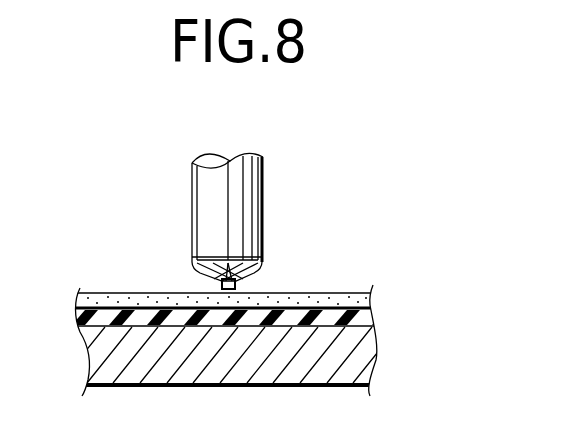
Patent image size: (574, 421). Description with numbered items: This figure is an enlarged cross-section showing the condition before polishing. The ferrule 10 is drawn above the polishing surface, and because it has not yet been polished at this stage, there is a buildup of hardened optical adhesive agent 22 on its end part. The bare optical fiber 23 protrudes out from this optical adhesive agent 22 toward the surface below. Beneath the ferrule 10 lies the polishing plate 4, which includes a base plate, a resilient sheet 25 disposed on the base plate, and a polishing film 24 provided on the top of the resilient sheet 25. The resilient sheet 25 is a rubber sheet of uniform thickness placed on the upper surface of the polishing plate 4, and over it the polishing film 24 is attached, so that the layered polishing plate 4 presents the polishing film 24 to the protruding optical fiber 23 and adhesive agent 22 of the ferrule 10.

The ferrule 10 is at (263, 190).
The optical adhesive agent 22 is at (242, 277).
The bare optical fiber 23 is at (220, 285).
The polishing film 24 is at (367, 303).
The resilient sheet 25 is at (364, 323).
The polishing plate 4 is at (365, 373).